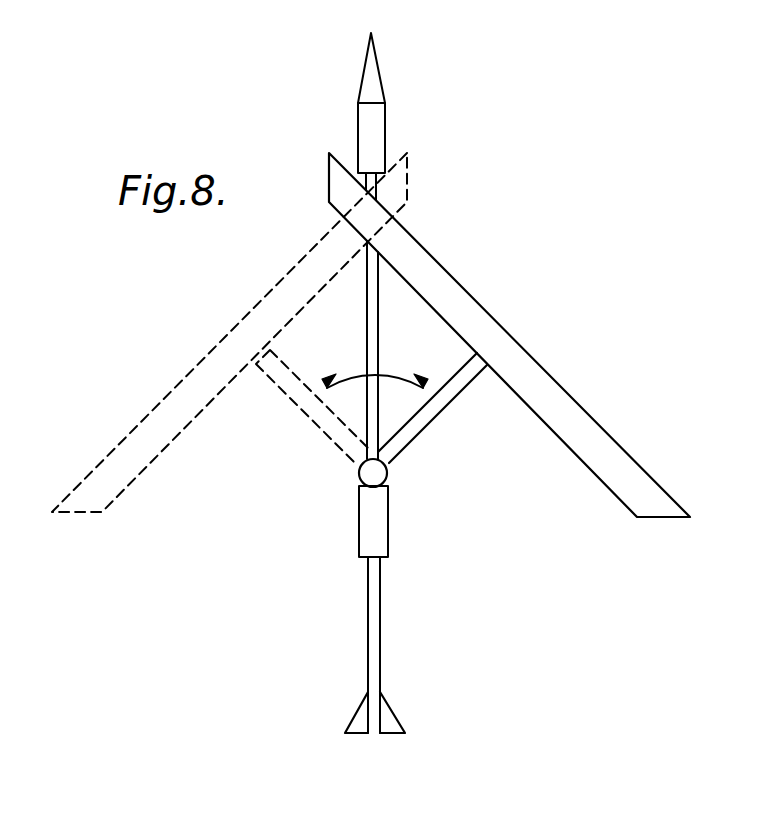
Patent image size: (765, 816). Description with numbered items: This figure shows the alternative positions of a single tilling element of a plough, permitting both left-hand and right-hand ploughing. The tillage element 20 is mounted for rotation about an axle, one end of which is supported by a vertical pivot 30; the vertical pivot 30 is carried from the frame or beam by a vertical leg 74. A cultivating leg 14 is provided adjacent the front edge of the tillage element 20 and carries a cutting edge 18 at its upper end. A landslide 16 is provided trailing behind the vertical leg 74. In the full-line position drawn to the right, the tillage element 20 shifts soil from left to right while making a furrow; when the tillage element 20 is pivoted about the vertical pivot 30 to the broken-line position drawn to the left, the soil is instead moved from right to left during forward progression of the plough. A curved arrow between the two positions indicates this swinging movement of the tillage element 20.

The cutting edge 18 is at (380, 79).
The cultivating leg 14 is at (380, 126).
The tillage element 20 is at (445, 268).
The vertical pivot 30 is at (413, 445).
The vertical leg 74 is at (358, 520).
The landslide 16 is at (368, 655).